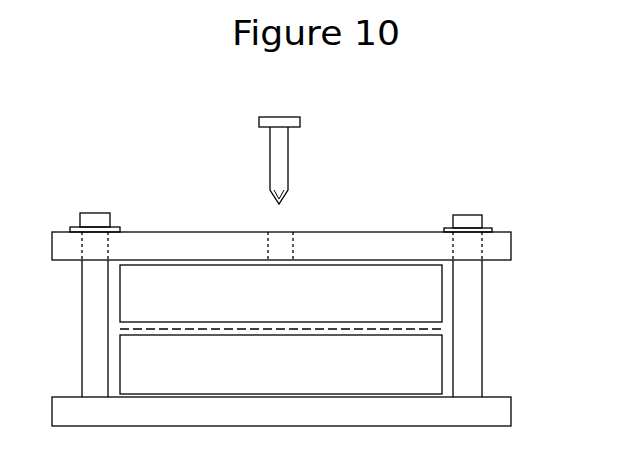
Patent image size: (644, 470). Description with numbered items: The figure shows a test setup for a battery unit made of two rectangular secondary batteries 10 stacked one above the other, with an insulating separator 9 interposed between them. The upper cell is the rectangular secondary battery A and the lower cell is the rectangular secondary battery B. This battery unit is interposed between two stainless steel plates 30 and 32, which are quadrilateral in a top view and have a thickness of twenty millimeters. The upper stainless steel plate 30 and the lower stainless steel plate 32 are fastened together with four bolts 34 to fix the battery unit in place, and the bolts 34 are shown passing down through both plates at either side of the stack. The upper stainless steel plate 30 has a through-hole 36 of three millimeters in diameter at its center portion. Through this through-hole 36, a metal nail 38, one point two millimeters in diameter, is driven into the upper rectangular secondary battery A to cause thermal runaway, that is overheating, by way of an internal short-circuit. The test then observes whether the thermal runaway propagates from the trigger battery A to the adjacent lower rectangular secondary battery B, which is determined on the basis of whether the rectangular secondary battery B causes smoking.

The metal nail 38 is at (270, 153).
The through-hole 36 is at (302, 248).
The bolts 34 is at (465, 215).
The stainless steel plate 30 is at (511, 243).
The stainless steel plate 32 is at (511, 410).
The rectangular secondary batteries 10 is at (351, 329).
The rectangular secondary battery A is at (442, 298).
The rectangular secondary battery B is at (442, 365).
The insulating separator 9 is at (140, 322).